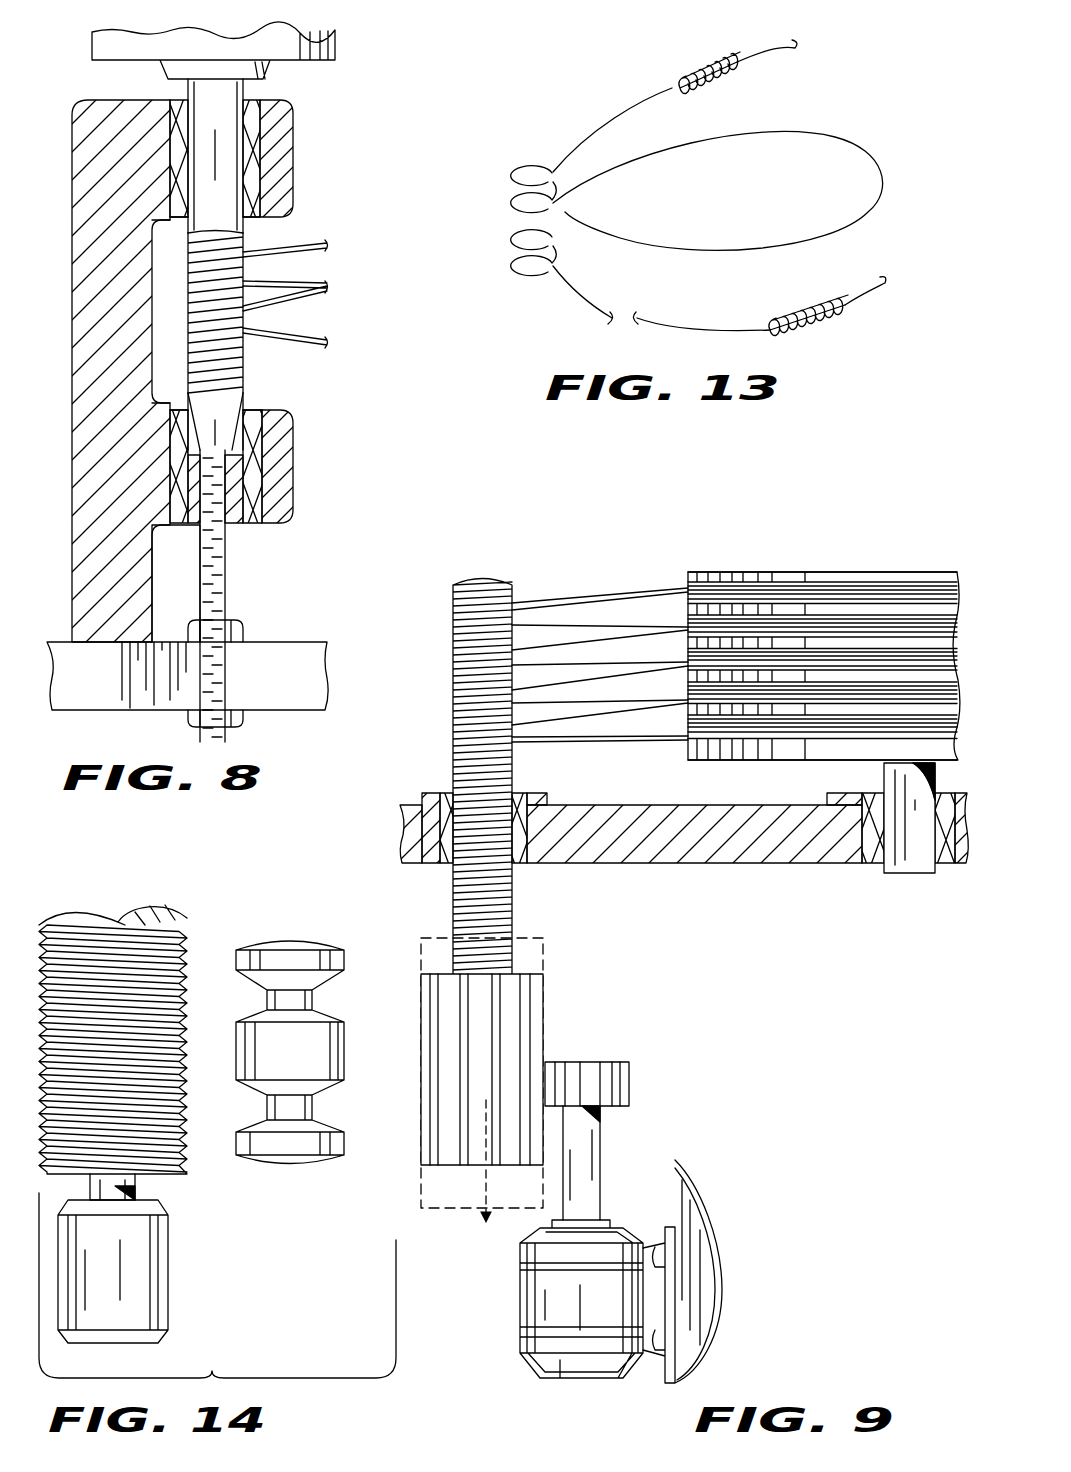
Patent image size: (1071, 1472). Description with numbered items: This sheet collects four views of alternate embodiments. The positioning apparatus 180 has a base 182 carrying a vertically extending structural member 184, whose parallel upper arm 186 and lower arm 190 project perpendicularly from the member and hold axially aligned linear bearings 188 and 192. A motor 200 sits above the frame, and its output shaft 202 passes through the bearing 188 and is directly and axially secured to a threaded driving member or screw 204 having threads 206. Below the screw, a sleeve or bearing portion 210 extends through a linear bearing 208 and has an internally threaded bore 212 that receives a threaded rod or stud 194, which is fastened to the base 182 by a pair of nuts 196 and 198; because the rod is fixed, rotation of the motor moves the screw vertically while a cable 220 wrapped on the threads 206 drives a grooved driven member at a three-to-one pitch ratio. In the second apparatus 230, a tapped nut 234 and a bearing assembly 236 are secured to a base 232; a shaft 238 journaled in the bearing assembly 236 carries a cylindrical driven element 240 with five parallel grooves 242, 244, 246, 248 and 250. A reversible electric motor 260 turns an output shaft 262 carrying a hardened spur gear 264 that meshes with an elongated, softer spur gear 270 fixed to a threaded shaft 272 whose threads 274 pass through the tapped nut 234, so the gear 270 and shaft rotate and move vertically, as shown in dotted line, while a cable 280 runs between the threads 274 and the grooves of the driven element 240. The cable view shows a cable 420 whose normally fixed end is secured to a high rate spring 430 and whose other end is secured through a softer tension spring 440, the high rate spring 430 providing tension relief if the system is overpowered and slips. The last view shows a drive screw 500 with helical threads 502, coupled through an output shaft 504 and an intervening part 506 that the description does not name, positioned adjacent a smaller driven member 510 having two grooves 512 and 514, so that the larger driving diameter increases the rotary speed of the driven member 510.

In FIG. 8, the positioning apparatus 180 is at (328, 523).
In FIG. 8, the base 182 is at (285, 648).
In FIG. 8, the vertically extending structural member 184 is at (128, 351).
In FIG. 8, the upper arm 186 is at (285, 188).
In FIG. 8, the linear bearing 188 is at (250, 220).
In FIG. 8, the lower arm 190 is at (278, 458).
In FIG. 8, the linear bearing 192 is at (260, 410).
In FIG. 8, the rod or stud 194 is at (220, 588).
In FIG. 8, the nut 196 is at (232, 628).
In FIG. 8, the nut 198 is at (236, 720).
In FIG. 8, the motor 200 is at (300, 60).
In FIG. 8, the output shaft 202 is at (243, 94).
In FIG. 8, the threaded driving member or screw 204 is at (243, 356).
In FIG. 8, the threads 206 is at (243, 381).
In FIG. 8, the linear bearing 208 is at (232, 522).
In FIG. 8, the sleeve or bearing portion 210 is at (190, 433).
In FIG. 8, the internally threaded bore 212 is at (200, 512).
In FIG. 8, the cable 220 is at (352, 240).
In FIG. 13, the cable 420 is at (625, 108).
In FIG. 13, the high rate spring 430 is at (695, 70).
In FIG. 13, the tension spring 440 is at (823, 333).
In FIG. 9, the apparatus 230 is at (555, 560).
In FIG. 9, the base 232 is at (425, 873).
In FIG. 9, the tapped nut 234 is at (437, 790).
In FIG. 9, the bearing assembly 236 is at (849, 782).
In FIG. 9, the shaft 238 is at (906, 872).
In FIG. 9, the driven element 240 is at (847, 565).
In FIG. 9, the groove 242 is at (682, 600).
In FIG. 9, the groove 244 is at (682, 636).
In FIG. 9, the groove 246 is at (675, 671).
In FIG. 9, the groove 248 is at (682, 704).
In FIG. 9, the groove 250 is at (680, 741).
In FIG. 9, the reversible electric motor 260 is at (520, 1290).
In FIG. 9, the output shaft 262 is at (595, 1166).
In FIG. 9, the spur gear 264 is at (630, 1075).
In FIG. 9, the spur gear 270 is at (545, 1005).
In FIG. 9, the threaded shaft 272 is at (480, 578).
In FIG. 9, the threads 274 is at (452, 745).
In FIG. 9, the cable 280 is at (597, 578).
In FIG. 14, the drive screw 500 is at (100, 905).
In FIG. 14, the screw threads 502 is at (178, 1010).
In FIG. 14, the output shaft 504 is at (150, 1340).
In FIG. 14, the neck 506 is at (140, 1197).
In FIG. 14, the driven member 510 is at (280, 940).
In FIG. 14, the groove 512 is at (318, 1015).
In FIG. 14, the groove 514 is at (252, 1118).